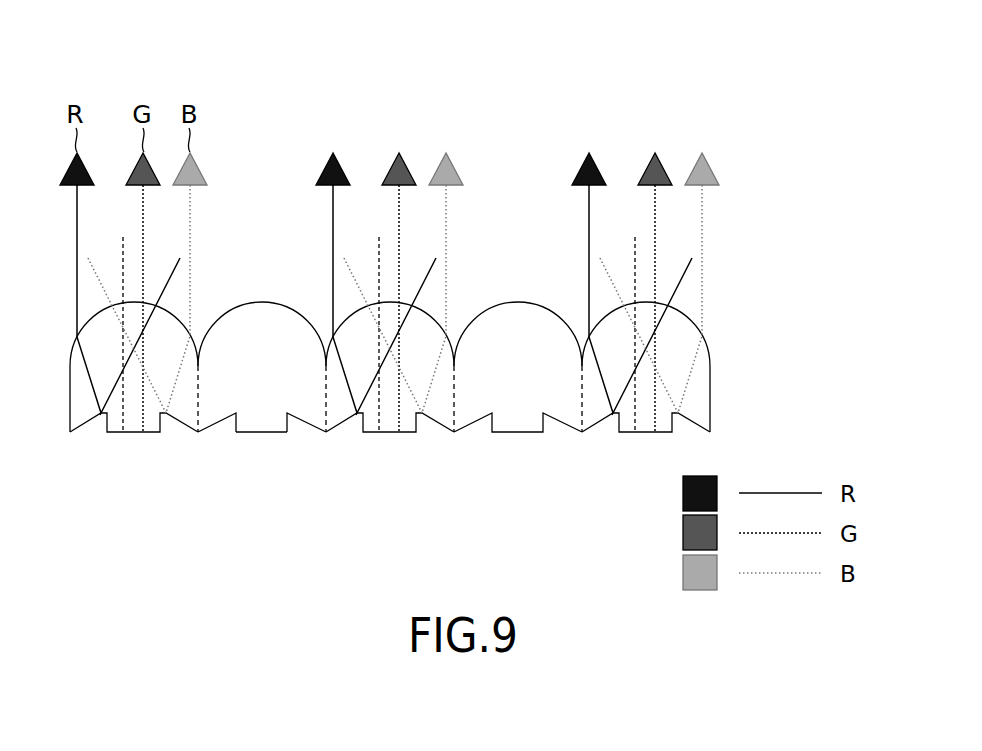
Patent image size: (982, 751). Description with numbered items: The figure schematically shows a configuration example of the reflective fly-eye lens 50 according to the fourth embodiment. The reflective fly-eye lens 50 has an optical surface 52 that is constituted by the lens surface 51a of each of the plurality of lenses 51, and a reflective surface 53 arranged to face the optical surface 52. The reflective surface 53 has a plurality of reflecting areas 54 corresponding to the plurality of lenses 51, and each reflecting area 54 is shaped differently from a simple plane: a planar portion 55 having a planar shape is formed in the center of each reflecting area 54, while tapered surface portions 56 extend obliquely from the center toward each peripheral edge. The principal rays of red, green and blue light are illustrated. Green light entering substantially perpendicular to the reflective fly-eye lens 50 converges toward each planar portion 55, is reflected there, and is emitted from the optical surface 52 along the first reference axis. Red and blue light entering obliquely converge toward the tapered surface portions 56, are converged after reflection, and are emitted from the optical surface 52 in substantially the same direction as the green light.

The reflective fly-eye lens 50 is at (390, 118).
The lens 51 is at (280, 303).
The lens surface 51a is at (232, 303).
The optical surface 52 is at (520, 303).
The reflective surface 53 is at (521, 427).
The reflecting area 54 is at (70, 435).
The planar portion 55 is at (254, 426).
The tapered surface portion 56 is at (301, 420).